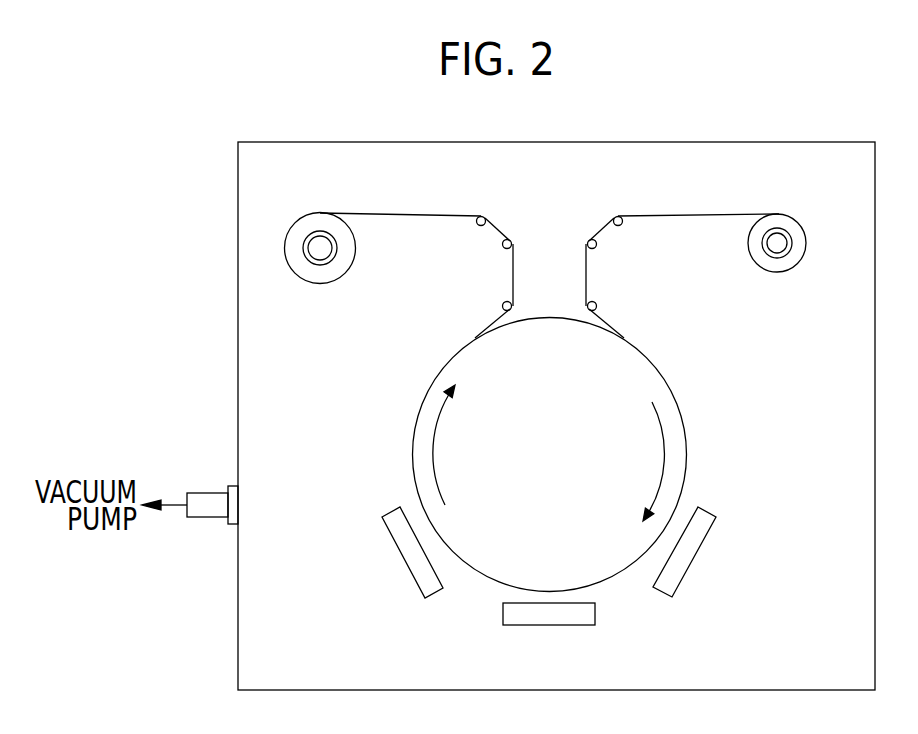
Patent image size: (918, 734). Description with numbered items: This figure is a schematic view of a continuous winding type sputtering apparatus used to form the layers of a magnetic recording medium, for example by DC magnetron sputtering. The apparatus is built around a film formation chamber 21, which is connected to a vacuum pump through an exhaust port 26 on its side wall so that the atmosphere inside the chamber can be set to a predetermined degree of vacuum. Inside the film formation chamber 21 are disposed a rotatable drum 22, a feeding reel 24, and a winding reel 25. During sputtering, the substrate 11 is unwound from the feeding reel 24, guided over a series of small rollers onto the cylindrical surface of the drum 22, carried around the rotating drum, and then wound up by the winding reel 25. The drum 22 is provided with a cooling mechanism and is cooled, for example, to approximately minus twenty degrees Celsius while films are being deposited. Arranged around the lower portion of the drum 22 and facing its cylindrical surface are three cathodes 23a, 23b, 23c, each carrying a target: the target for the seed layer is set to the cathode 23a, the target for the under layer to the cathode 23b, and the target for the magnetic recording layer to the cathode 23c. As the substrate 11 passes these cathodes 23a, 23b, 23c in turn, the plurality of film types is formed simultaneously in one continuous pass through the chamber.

The substrate 11 is at (588, 275).
The film formation chamber 21 is at (238, 272).
The drum 22 is at (420, 432).
The cathode 23a is at (700, 555).
The cathode 23b is at (552, 625).
The cathode 23c is at (400, 557).
The feeding reel 24 is at (793, 232).
The winding reel 25 is at (303, 230).
The exhaust port 26 is at (203, 517).